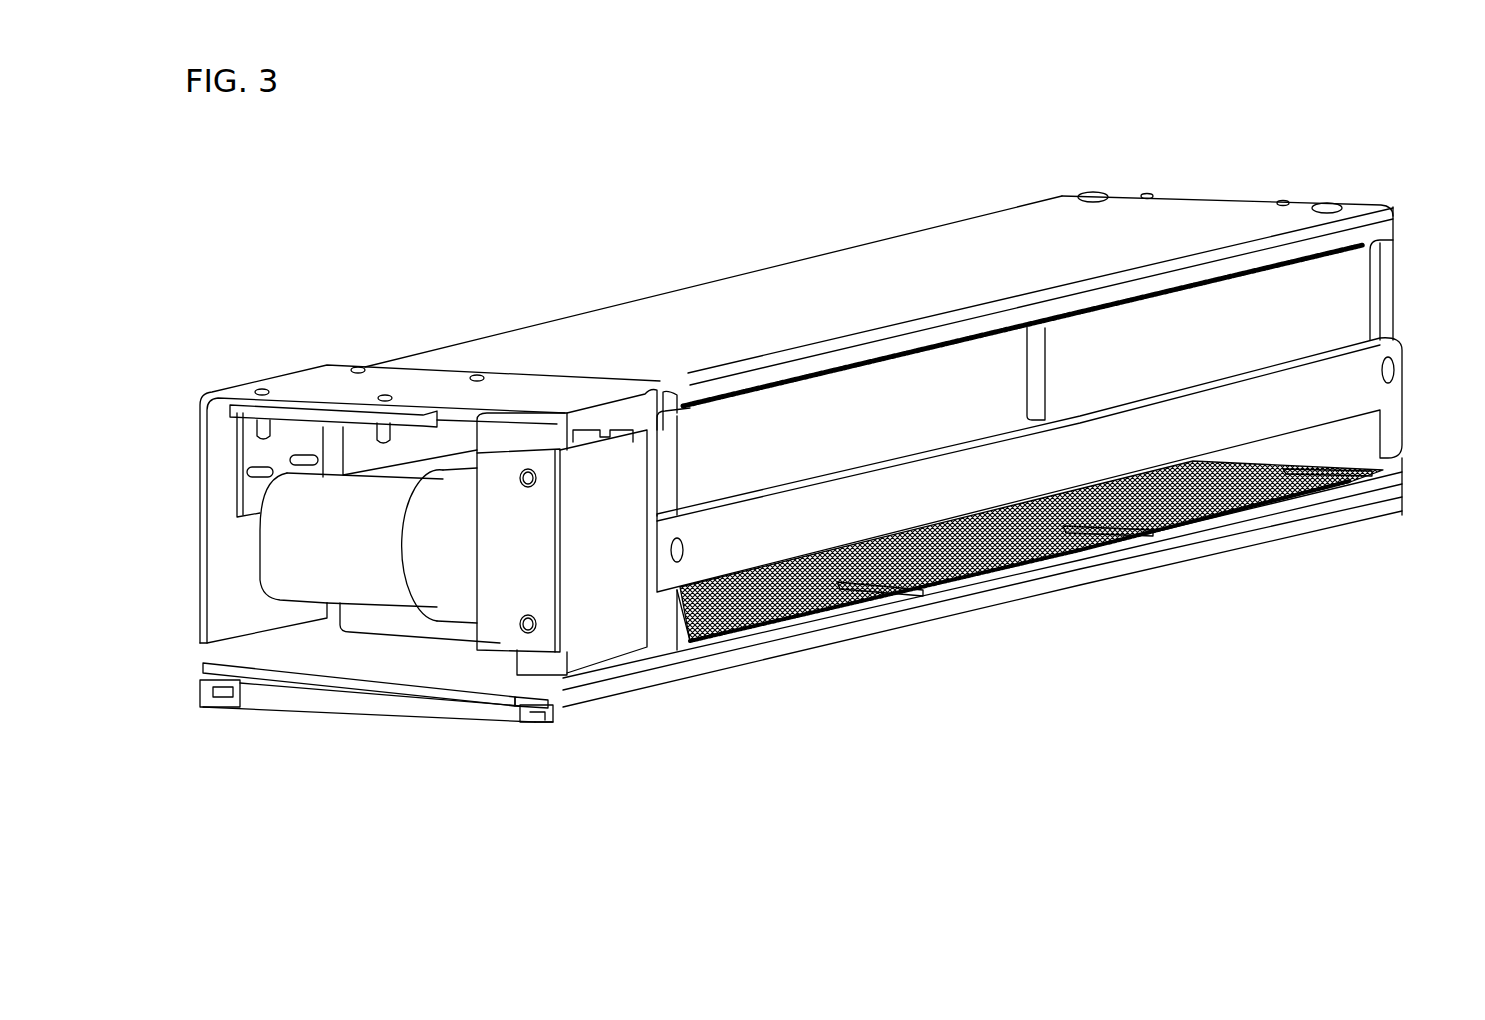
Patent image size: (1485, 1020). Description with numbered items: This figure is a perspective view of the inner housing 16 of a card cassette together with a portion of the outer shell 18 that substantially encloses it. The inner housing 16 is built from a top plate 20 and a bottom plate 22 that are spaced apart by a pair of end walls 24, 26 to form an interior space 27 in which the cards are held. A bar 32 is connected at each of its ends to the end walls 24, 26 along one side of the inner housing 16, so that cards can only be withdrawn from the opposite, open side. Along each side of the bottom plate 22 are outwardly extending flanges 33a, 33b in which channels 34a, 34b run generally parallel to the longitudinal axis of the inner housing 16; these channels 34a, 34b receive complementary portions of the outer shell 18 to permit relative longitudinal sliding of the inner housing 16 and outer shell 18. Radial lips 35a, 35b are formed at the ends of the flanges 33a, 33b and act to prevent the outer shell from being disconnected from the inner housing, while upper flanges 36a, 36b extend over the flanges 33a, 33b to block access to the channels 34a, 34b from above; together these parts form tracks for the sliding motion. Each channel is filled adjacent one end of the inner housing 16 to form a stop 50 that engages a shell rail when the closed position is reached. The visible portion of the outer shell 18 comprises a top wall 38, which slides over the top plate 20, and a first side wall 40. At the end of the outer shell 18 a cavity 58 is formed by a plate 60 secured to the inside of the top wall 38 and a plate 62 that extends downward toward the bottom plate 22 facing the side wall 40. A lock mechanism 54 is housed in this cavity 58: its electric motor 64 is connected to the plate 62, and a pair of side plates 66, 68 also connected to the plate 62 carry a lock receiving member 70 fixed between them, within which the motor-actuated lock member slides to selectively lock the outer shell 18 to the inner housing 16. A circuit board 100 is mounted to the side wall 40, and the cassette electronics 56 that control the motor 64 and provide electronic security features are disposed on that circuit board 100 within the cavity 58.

The inner housing 16 is at (928, 205).
The outer shell 18 is at (313, 372).
The top plate 20 is at (1040, 220).
The bottom plate 22 is at (1072, 585).
The end wall 24 is at (1380, 293).
The end wall 26 is at (679, 620).
The interior space 27 is at (858, 405).
The bar 32 is at (1368, 405).
The flange 33a is at (232, 702).
The flange 33b is at (535, 706).
The channel 34a is at (222, 695).
The channel 34b is at (530, 702).
The radial lip 35a is at (205, 693).
The radial lip 35b is at (548, 700).
The flange 36a is at (205, 672).
The flange 36b is at (542, 693).
The top wall 38 is at (340, 378).
The first side wall 40 is at (205, 527).
The stop 50 is at (1217, 528).
The lock mechanism 54 is at (435, 630).
The cassette electronics 56 is at (218, 443).
The cavity 58 is at (360, 440).
The plate 60 is at (245, 410).
The plate 62 is at (503, 441).
The electric motor 64 is at (378, 592).
The side plate 66 is at (500, 643).
The side plate 68 is at (580, 430).
The lock receiving member 70 is at (622, 430).
The circuit board 100 is at (255, 492).